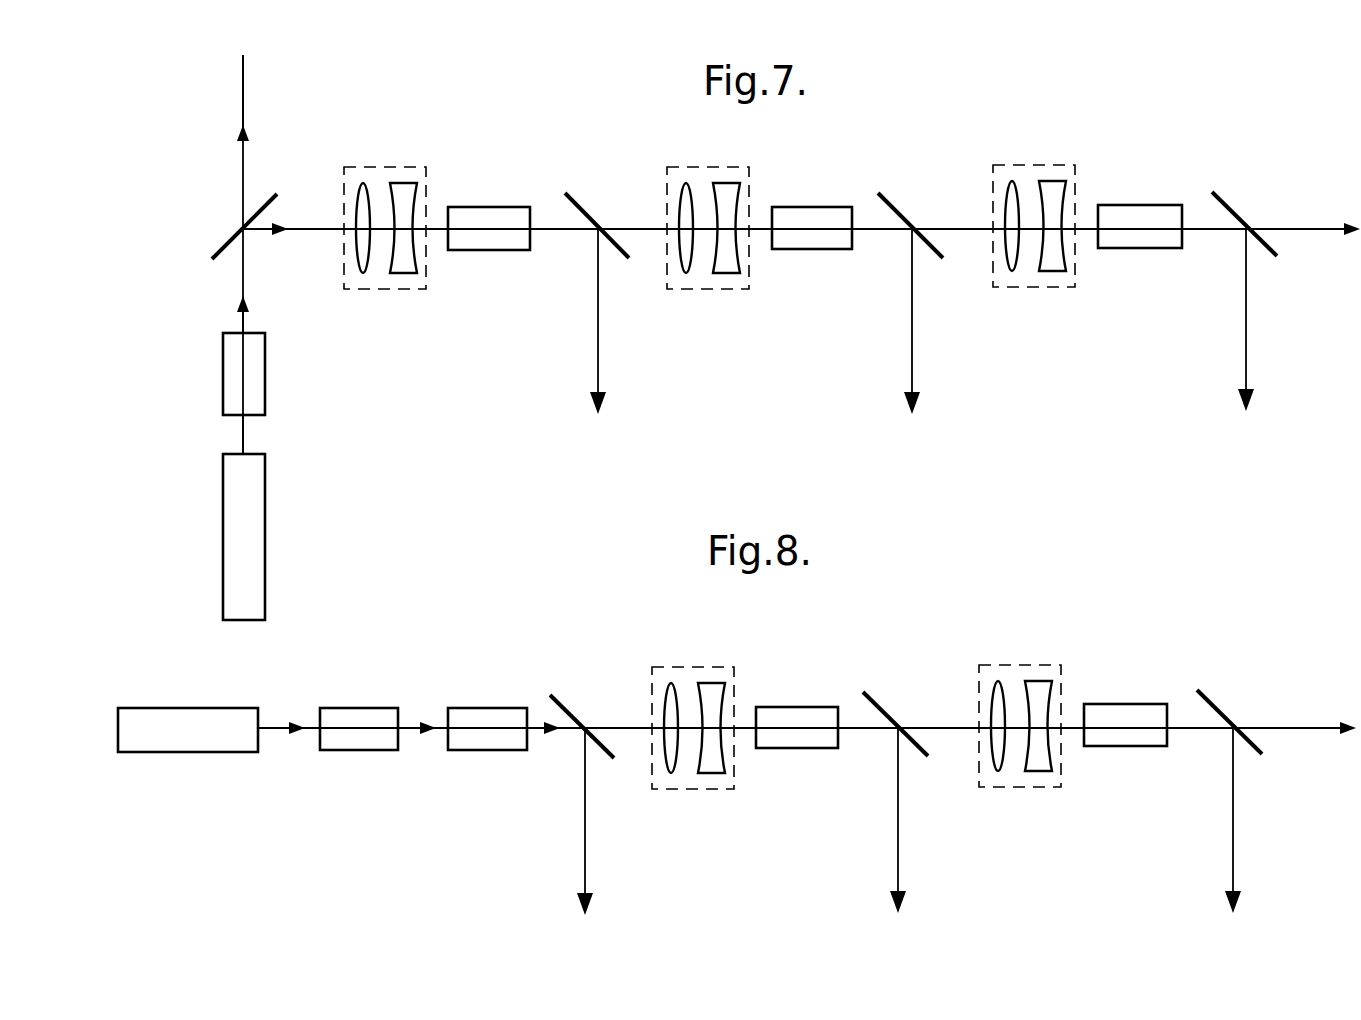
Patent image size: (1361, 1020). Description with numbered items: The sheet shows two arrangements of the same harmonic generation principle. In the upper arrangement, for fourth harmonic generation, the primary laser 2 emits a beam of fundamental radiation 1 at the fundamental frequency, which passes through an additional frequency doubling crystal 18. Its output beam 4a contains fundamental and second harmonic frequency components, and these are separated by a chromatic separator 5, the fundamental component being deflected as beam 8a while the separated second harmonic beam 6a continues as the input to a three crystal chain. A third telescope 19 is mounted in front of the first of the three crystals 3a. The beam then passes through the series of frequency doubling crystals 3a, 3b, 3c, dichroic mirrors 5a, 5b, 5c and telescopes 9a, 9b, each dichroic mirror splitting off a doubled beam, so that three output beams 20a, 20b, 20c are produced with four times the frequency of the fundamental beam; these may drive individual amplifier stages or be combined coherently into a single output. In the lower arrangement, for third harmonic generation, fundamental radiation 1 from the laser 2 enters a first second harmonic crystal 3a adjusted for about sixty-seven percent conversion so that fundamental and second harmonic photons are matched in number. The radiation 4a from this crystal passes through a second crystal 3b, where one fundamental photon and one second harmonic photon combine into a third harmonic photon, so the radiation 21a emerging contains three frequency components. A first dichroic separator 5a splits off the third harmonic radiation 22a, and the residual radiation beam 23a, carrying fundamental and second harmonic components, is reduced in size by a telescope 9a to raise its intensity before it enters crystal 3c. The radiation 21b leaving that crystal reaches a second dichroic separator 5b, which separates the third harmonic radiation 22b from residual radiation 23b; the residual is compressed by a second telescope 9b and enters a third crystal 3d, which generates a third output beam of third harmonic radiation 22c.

In FIG. 7, the beam of fundamental radiation 1 is at (228, 433).
In FIG. 8, the beam of fundamental radiation 1 is at (272, 748).
In FIG. 7, the primary laser 2 is at (232, 592).
In FIG. 8, the primary laser 2 is at (217, 744).
In FIG. 7, the additional frequency doubling crystal 18 is at (232, 370).
In FIG. 7, the output beam 4a is at (258, 322).
In FIG. 8, the output beam 4a is at (427, 703).
In FIG. 7, the chromatic separator 5 is at (215, 236).
In FIG. 7, the separated fundamental beam 8a is at (258, 67).
In FIG. 7, the separated second harmonic beam 6a is at (314, 212).
In FIG. 7, the third telescope 19 is at (405, 288).
In FIG. 7, the first frequency doubling crystal 3a is at (475, 217).
In FIG. 8, the first frequency doubling crystal 3a is at (378, 718).
In FIG. 7, the first dichroic separator 5a is at (578, 205).
In FIG. 8, the first dichroic separator 5a is at (560, 705).
In FIG. 7, the first fourth harmonic output beam 20a is at (614, 368).
In FIG. 7, the first telescope 9a is at (727, 286).
In FIG. 8, the first telescope 9a is at (712, 784).
In FIG. 7, the second frequency doubling crystal 3b is at (797, 215).
In FIG. 8, the second frequency doubling crystal 3b is at (487, 744).
In FIG. 7, the second dichroic separator 5b is at (890, 205).
In FIG. 8, the second dichroic separator 5b is at (882, 702).
In FIG. 7, the second fourth harmonic output beam 20b is at (928, 368).
In FIG. 7, the second telescope 9b is at (1055, 288).
In FIG. 8, the second telescope 9b is at (1040, 783).
In FIG. 7, the third frequency doubling crystal 3c is at (1117, 213).
In FIG. 8, the third frequency doubling crystal 3c is at (782, 715).
In FIG. 7, the third dichroic mirror 5c is at (1225, 203).
In FIG. 8, the third dichroic mirror 5c is at (1215, 702).
In FIG. 7, the third fourth harmonic output beam 20c is at (1262, 366).
In FIG. 8, the third crystal 3d is at (1103, 712).
In FIG. 8, the radiation emerging from the second crystal 21a is at (538, 703).
In FIG. 8, the residual radiation beam 23a is at (630, 703).
In FIG. 8, the third harmonic radiation 22a is at (600, 868).
In FIG. 8, the radiation emerging from the third crystal 21b is at (853, 705).
In FIG. 8, the residual radiation 23b is at (954, 705).
In FIG. 8, the third harmonic radiation 22b is at (914, 867).
In FIG. 8, the third output beam of third harmonic radiation 22c is at (1187, 748).